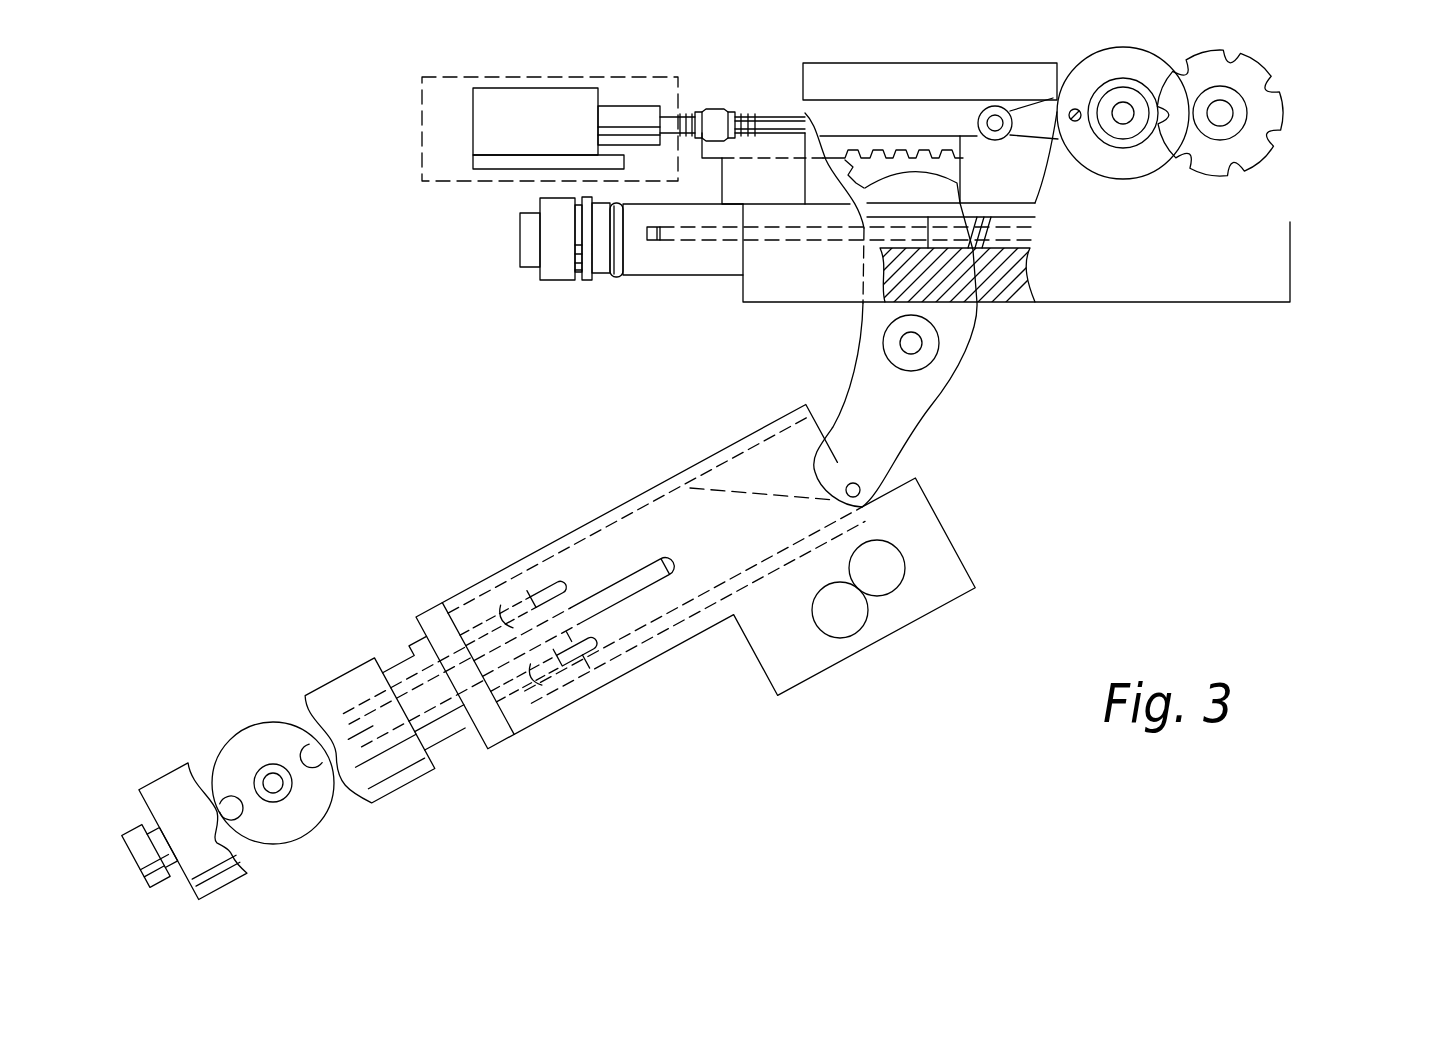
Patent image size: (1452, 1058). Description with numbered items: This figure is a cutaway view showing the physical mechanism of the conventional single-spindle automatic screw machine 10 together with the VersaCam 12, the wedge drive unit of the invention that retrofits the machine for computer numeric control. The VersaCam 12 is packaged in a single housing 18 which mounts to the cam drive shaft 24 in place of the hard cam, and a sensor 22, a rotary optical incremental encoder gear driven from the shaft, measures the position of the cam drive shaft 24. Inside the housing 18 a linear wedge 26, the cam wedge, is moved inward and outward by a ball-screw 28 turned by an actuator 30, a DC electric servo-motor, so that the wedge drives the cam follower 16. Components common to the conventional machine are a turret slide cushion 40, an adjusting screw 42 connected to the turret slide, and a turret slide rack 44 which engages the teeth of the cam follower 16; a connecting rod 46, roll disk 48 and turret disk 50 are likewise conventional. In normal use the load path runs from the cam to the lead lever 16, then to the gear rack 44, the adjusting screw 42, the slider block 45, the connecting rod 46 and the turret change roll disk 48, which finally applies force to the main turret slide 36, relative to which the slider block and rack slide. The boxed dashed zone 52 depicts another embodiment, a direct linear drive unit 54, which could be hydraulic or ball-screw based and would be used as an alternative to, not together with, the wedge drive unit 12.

The single-spindle automatic screw machine 10 is at (1330, 223).
The VersaCam 12 is at (672, 722).
The cam follower 16 is at (940, 405).
The housing 18 is at (555, 722).
The sensor 22 is at (868, 623).
The cam drive shaft 24 is at (905, 575).
The linear wedge 26 is at (735, 490).
The ball-screw 28 is at (613, 583).
The actuator 30 is at (397, 788).
The main turret slide 36 is at (1252, 287).
The turret slide cushion 40 is at (624, 276).
The adjusting screw 42 is at (686, 118).
The turret slide rack 44 is at (713, 120).
The slider block 45 is at (850, 120).
The connecting rod 46 is at (1007, 140).
The roll disk 48 is at (1140, 185).
The turret disk 50 is at (1279, 91).
The boxed dashed zone 52 is at (432, 77).
The direct linear drive unit 54 is at (548, 128).